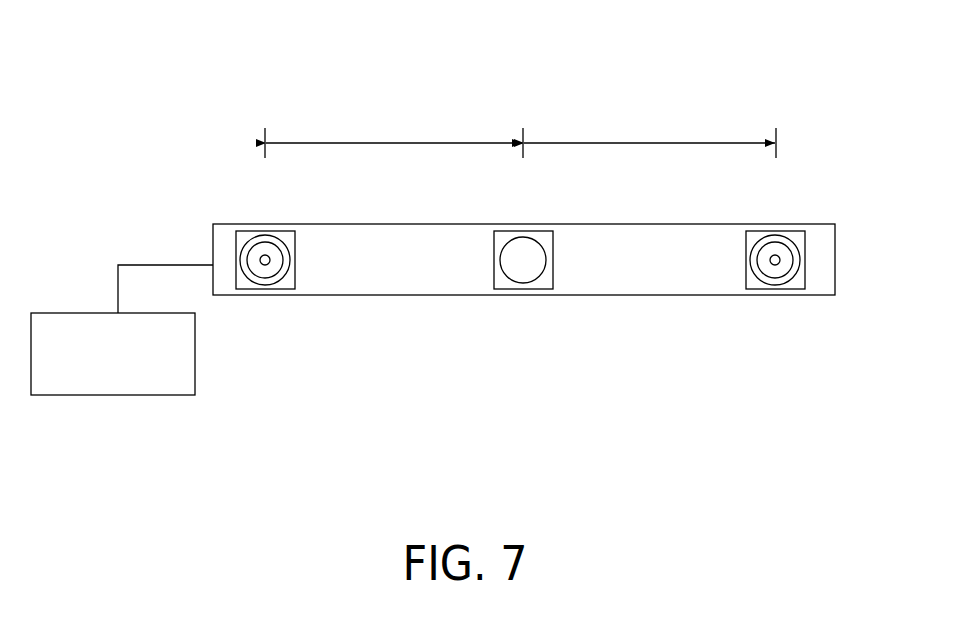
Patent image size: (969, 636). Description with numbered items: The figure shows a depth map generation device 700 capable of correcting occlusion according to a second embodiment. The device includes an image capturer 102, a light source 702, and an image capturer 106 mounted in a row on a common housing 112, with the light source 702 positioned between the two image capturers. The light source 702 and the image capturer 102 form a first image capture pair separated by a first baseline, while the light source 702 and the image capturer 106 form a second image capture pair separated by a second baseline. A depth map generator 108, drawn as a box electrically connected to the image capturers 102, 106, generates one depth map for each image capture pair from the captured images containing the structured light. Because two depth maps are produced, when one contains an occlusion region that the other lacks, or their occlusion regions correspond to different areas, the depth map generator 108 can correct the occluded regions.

The depth map generation device 700 is at (196, 102).
The housing / support bar 112 is at (835, 263).
The image capturer 102 is at (248, 289).
The light source 702 is at (523, 289).
The image capturer 106 is at (797, 289).
The depth map generator 108 is at (118, 395).